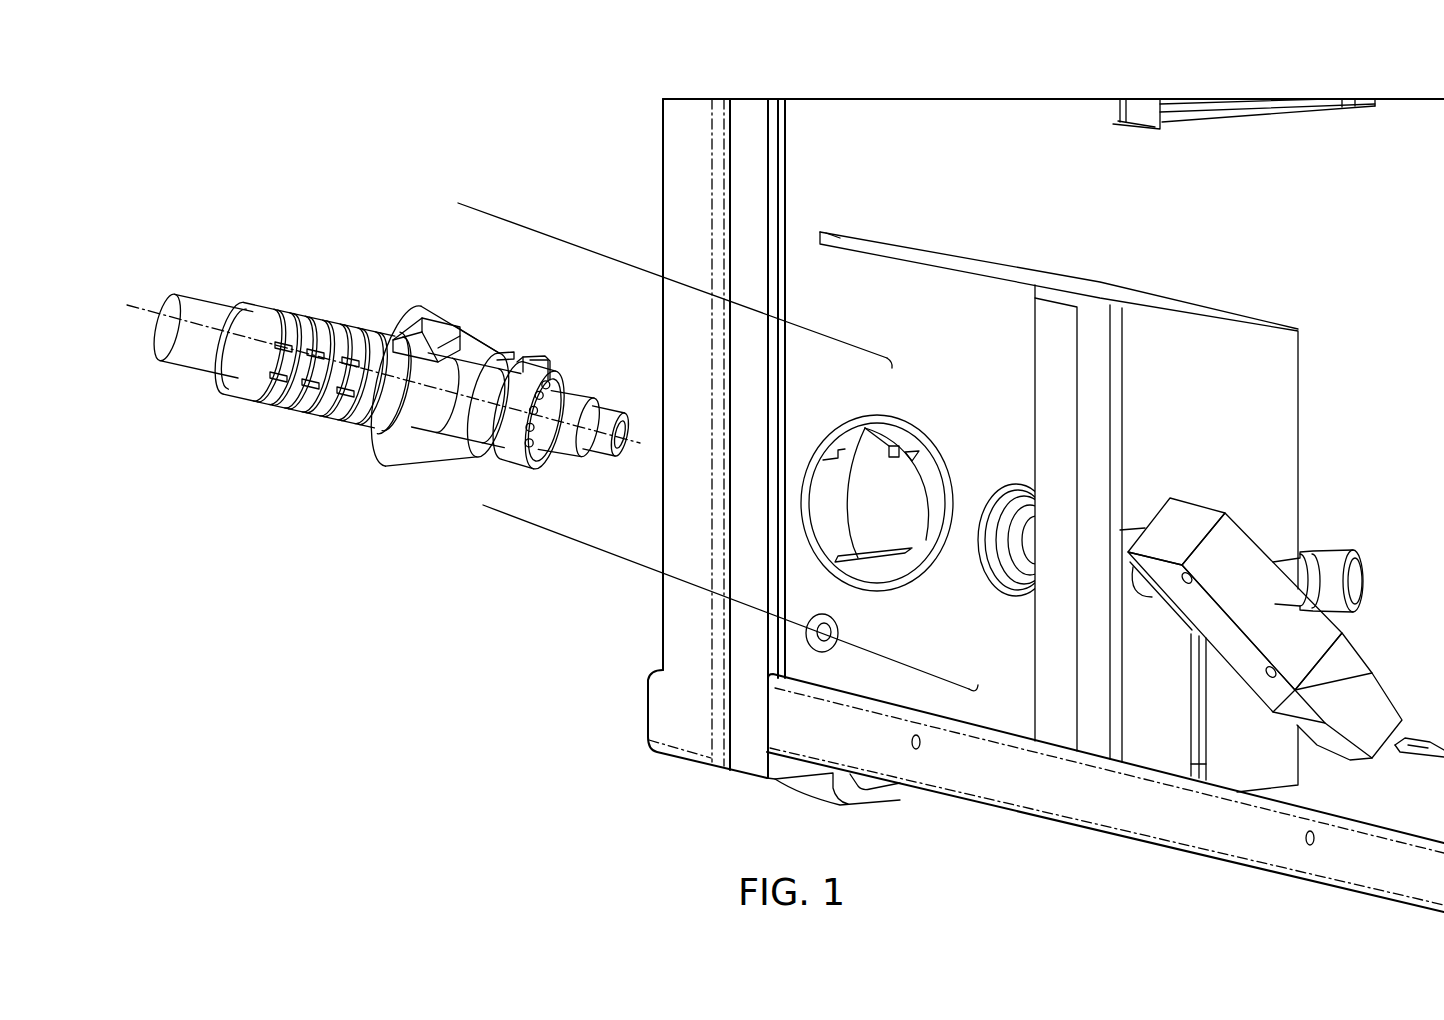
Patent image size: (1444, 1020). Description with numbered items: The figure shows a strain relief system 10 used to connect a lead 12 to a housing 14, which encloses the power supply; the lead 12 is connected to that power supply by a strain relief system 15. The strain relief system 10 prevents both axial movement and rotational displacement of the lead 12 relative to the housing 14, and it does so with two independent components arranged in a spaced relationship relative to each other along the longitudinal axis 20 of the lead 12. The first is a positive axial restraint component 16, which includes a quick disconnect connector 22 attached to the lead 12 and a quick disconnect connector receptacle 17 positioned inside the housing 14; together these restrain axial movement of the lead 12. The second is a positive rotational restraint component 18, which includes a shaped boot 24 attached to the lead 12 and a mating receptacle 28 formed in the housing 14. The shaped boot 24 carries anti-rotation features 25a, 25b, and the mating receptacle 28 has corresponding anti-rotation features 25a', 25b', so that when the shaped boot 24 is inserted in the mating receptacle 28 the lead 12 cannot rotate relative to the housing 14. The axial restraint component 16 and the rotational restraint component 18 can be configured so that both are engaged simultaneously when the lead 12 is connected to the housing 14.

The strain relief system 10 is at (535, 603).
The lead 12 is at (203, 293).
The housing 14 is at (821, 98).
The strain relief system 15 is at (310, 480).
The positive axial restraint component 16 is at (708, 590).
The quick disconnect connector receptacle 17 is at (990, 575).
The positive rotational restraint component 18 is at (588, 258).
The longitudinal axis 20 is at (150, 304).
The quick disconnect connector 22 is at (600, 407).
The shaped boot 24 is at (442, 320).
The anti-rotation feature 25a is at (488, 324).
The anti-rotation feature 25b is at (538, 344).
The anti-rotation feature 25a' is at (921, 423).
The anti-rotation feature 25b' is at (946, 438).
The mating receptacle 28 is at (869, 572).